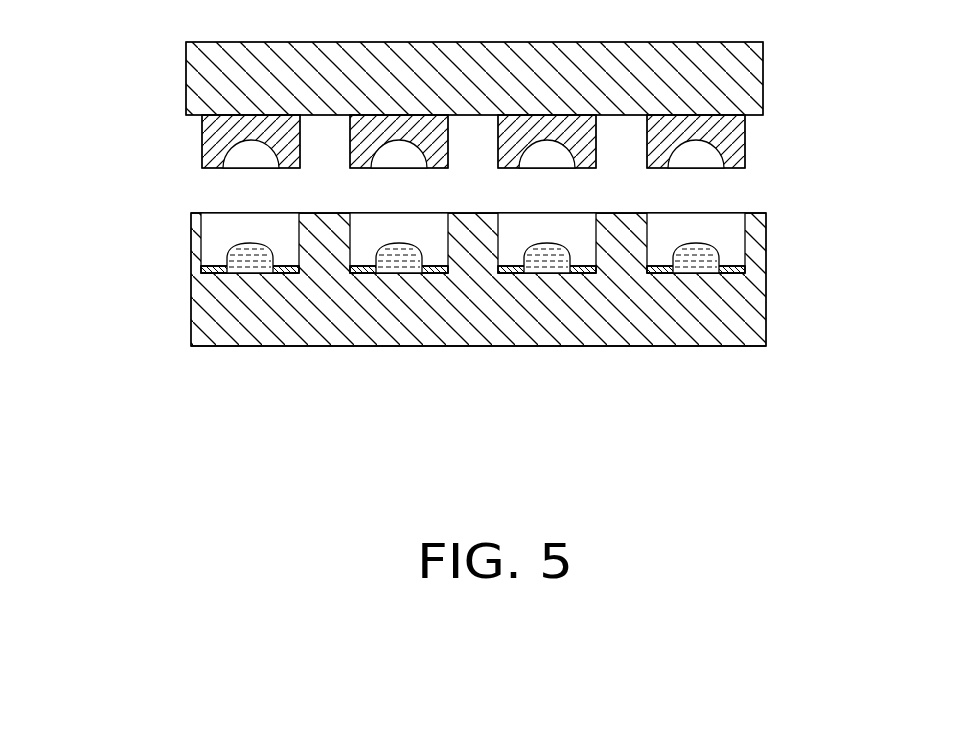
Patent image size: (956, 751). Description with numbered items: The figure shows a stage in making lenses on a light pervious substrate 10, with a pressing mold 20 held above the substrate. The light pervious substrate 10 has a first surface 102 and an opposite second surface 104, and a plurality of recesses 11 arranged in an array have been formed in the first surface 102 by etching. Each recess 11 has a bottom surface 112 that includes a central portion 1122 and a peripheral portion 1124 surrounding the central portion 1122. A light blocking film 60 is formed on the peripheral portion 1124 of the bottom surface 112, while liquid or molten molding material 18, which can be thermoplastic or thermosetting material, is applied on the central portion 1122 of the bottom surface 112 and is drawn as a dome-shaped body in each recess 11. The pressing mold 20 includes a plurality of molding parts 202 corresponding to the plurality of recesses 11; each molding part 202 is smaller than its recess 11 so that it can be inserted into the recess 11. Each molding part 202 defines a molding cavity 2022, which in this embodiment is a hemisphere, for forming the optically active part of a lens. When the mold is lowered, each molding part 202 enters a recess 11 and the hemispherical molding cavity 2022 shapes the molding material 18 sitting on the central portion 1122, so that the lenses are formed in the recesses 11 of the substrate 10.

The pressing mold 20 is at (763, 66).
The molding part 202 is at (212, 128).
The molding cavity 2022 is at (237, 160).
The light pervious substrate 10 is at (760, 283).
The first surface 102 is at (752, 213).
The second surface 104 is at (752, 346).
The recess 11 is at (222, 230).
The bottom surface 112 is at (73, 305).
The peripheral portion 1124 is at (206, 275).
The central portion 1122 is at (244, 276).
The light blocking film 60 is at (210, 267).
The molding material 18 is at (258, 258).